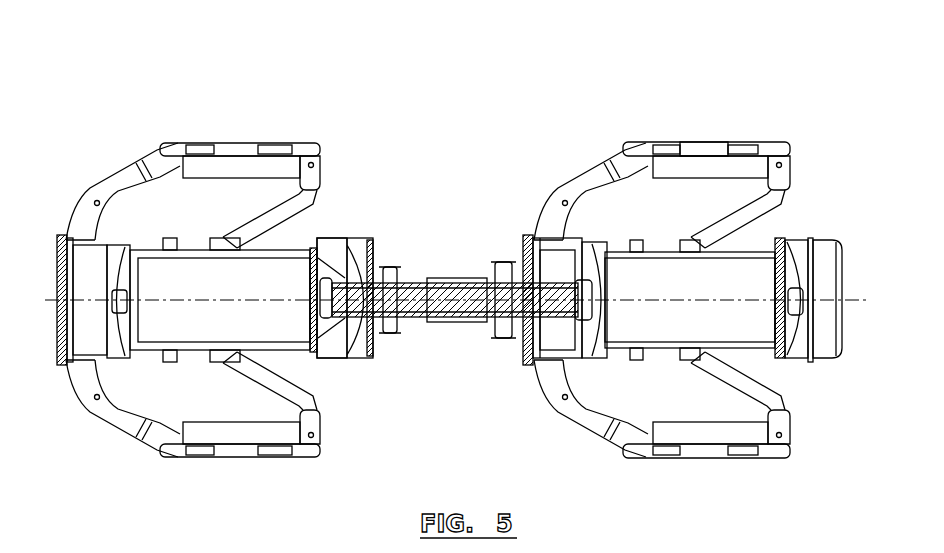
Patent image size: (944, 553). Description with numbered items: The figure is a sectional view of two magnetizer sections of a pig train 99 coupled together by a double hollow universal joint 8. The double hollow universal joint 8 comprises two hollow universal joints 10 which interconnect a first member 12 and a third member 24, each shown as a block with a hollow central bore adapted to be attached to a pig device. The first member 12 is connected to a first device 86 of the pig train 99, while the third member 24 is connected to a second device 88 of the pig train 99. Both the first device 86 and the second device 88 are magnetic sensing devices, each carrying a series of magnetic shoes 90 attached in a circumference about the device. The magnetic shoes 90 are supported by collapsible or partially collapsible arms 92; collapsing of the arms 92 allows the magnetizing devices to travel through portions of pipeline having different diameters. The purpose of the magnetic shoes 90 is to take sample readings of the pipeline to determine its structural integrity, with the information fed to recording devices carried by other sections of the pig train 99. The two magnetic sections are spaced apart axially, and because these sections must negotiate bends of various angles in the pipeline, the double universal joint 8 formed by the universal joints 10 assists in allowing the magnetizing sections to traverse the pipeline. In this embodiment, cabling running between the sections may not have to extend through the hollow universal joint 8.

The double hollow universal joint 8 is at (460, 190).
The hollow universal joint 10 is at (383, 348).
The first member 12 is at (376, 268).
The third member 24 is at (508, 252).
The first device 86 is at (334, 222).
The second device 88 is at (700, 143).
The magnetic shoes 90 is at (188, 142).
The collapsible arms 92 is at (96, 185).
The pig train 99 is at (90, 437).